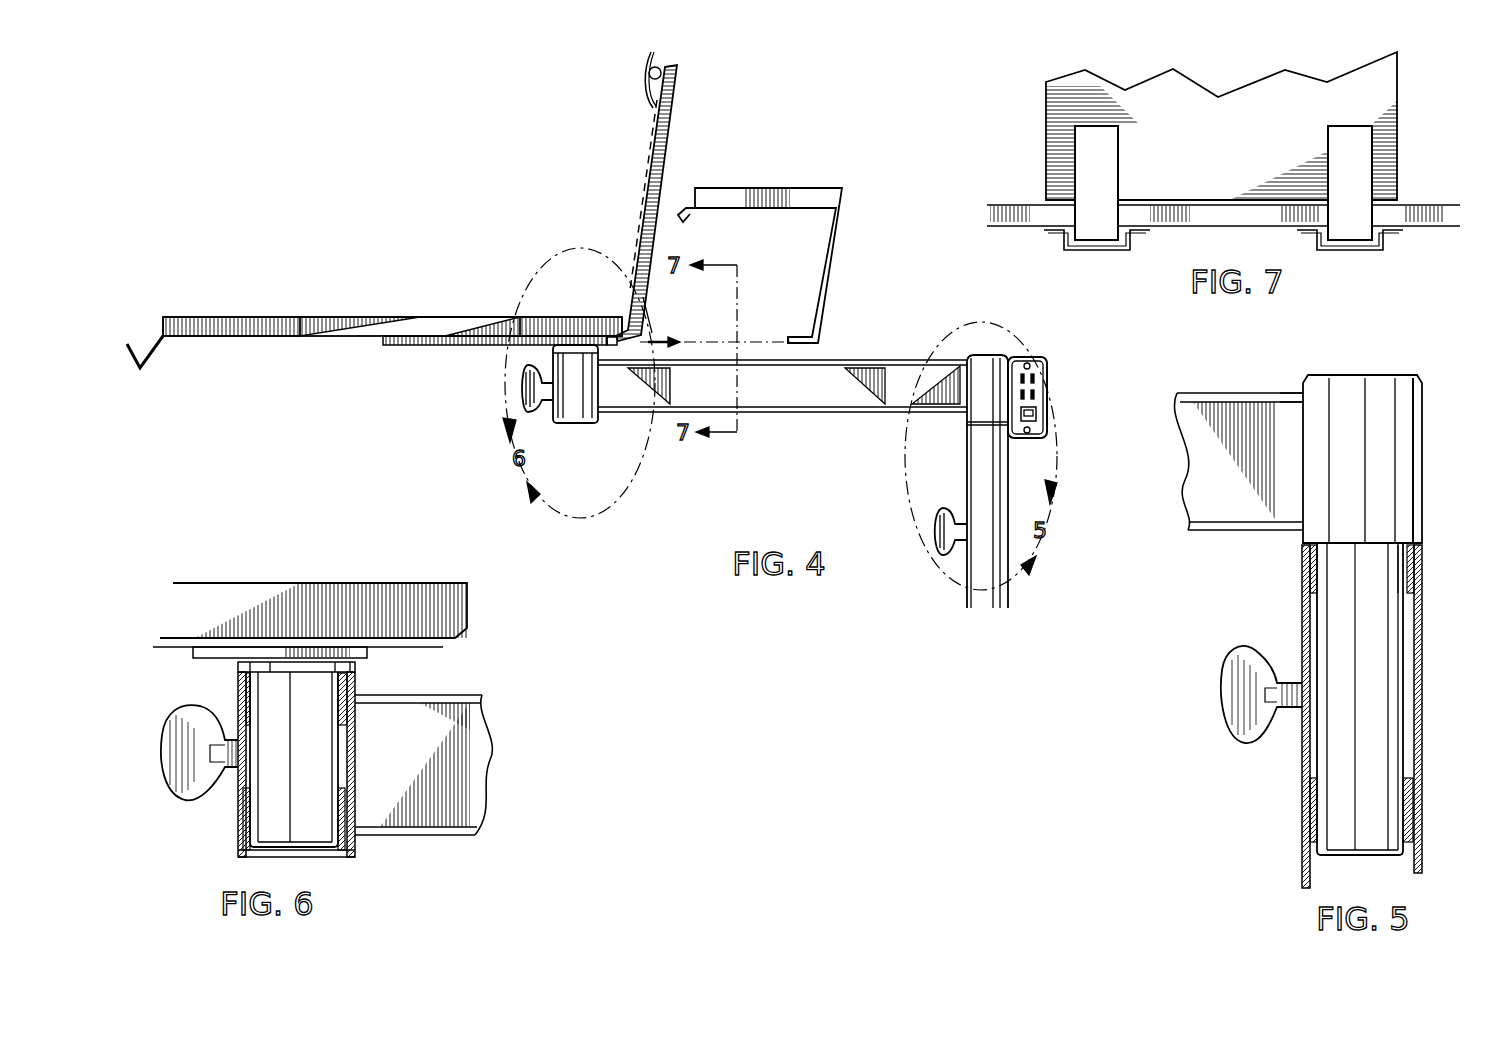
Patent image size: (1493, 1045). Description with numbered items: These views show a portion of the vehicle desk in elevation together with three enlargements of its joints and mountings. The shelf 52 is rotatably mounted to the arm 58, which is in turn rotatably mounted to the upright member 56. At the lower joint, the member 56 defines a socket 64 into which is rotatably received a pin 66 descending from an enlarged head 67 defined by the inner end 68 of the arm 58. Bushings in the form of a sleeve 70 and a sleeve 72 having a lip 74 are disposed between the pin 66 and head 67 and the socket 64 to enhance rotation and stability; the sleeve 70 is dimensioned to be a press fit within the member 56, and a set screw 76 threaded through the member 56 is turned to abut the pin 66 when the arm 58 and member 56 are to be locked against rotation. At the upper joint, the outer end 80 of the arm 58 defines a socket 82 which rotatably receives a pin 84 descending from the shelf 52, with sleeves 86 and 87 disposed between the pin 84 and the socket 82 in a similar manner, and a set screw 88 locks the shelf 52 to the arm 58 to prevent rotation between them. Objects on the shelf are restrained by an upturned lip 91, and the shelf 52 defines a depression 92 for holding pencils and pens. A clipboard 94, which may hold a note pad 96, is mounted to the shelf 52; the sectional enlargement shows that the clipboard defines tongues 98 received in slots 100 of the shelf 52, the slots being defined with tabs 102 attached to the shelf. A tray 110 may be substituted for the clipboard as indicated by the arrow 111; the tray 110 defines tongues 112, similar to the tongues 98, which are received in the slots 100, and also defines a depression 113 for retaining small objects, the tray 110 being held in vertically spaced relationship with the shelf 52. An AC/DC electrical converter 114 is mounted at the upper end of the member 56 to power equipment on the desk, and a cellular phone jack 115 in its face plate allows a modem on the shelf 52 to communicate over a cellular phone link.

In FIG. 4, the shelf 52 is at (330, 340).
In FIG. 6, the shelf 52 is at (260, 592).
In FIG. 4, the member 56 is at (978, 440).
In FIG. 5, the member 56 is at (1300, 860).
In FIG. 4, the arm 58 is at (840, 393).
In FIG. 5, the arm 58 is at (1215, 512).
In FIG. 6, the arm 58 is at (458, 766).
In FIG. 5, the socket 64 is at (1316, 645).
In FIG. 5, the pin 66 is at (1378, 718).
In FIG. 5, the enlarged head 67 is at (1390, 412).
In FIG. 5, the inner end 68 is at (1285, 395).
In FIG. 5, the sleeve 70 is at (1305, 770).
In FIG. 5, the sleeve 72 is at (1402, 580).
In FIG. 5, the lip 74 is at (1424, 548).
In FIG. 5, the set screw 76 is at (1232, 648).
In FIG. 6, the outer end 80 is at (385, 692).
In FIG. 6, the socket 82 is at (325, 760).
In FIG. 6, the pin 84 is at (243, 800).
In FIG. 6, the sleeve 86 is at (340, 852).
In FIG. 6, the sleeve 87 is at (238, 676).
In FIG. 6, the set screw 88 is at (162, 775).
In FIG. 4, the upturned lip 91 is at (350, 318).
In FIG. 4, the depression 92 is at (140, 320).
In FIG. 4, the clipboard 94 is at (675, 88).
In FIG. 7, the clipboard 94 is at (1378, 108).
In FIG. 4, the note pad 96 is at (645, 150).
In FIG. 4, the tongues 98 is at (622, 340).
In FIG. 7, the tongues 98 is at (1092, 136).
In FIG. 7, the slots 100 is at (1058, 237).
In FIG. 7, the tabs 102 is at (1376, 240).
In FIG. 4, the tray 110 is at (822, 190).
In FIG. 4, the arrow 111 is at (753, 338).
In FIG. 4, the tongues 112 is at (787, 353).
In FIG. 4, the depression 113 is at (682, 207).
In FIG. 4, the AC/DC electrical converter 114 is at (1043, 372).
In FIG. 4, the cellular phone jack 115 is at (1040, 410).